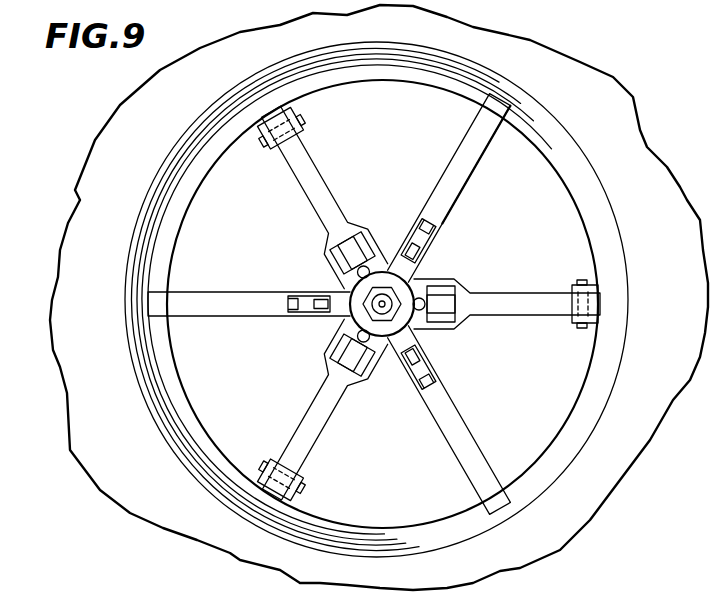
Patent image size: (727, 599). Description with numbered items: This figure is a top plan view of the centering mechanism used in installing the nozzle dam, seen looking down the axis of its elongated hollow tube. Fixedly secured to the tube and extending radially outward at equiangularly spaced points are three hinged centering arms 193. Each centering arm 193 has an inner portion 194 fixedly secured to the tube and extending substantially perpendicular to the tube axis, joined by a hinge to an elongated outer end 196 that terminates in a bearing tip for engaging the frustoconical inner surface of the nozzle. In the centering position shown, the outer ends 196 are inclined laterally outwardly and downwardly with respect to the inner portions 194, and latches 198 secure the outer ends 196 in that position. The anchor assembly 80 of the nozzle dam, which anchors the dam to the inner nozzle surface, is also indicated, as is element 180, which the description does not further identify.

The wheel 80 is at (355, 203).
The spoke 180 is at (279, 323).
The spoke arm 193 is at (473, 193).
The hub 194 is at (400, 262).
The spoke bar 196 is at (483, 132).
The adjustable clamp 198 is at (308, 302).